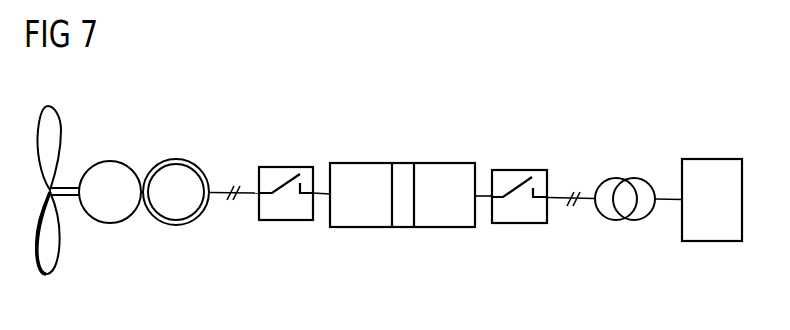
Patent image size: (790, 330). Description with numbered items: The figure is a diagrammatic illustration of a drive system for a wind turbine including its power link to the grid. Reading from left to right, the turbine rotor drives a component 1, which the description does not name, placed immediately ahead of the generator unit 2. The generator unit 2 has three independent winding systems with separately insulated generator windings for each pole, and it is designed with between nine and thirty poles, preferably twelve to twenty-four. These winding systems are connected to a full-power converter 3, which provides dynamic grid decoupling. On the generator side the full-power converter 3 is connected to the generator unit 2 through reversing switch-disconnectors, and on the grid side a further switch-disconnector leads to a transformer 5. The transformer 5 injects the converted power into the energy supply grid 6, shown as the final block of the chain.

The gear box 1 is at (109, 160).
The generator unit 2 is at (175, 159).
The full-power converter 3 is at (402, 163).
The transformer 5 is at (614, 178).
The energy supply grid 6 is at (712, 159).